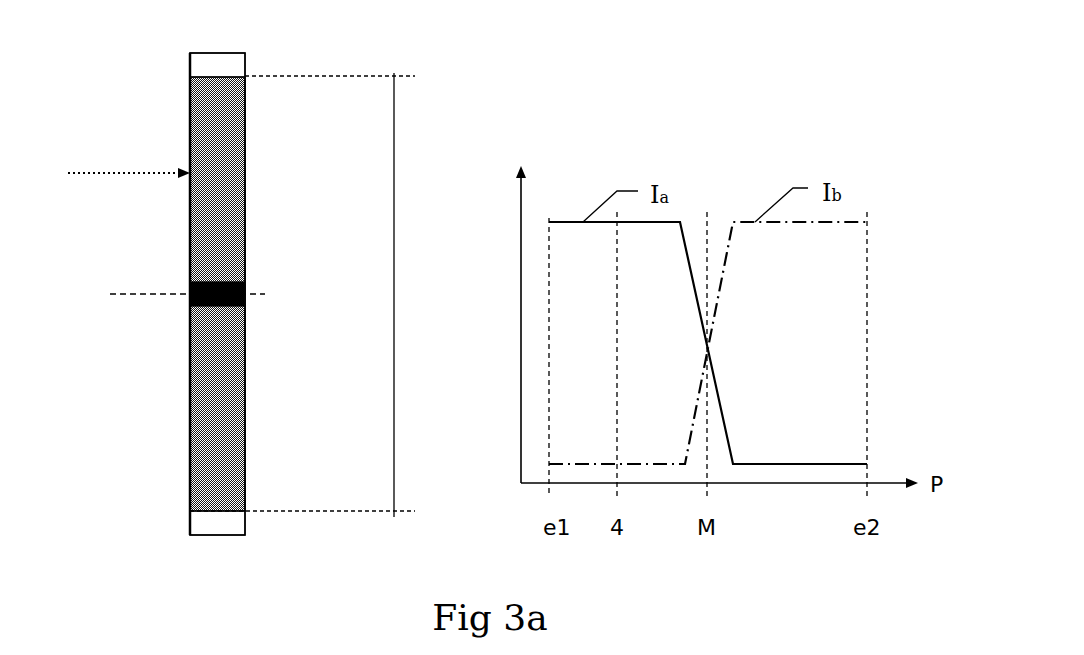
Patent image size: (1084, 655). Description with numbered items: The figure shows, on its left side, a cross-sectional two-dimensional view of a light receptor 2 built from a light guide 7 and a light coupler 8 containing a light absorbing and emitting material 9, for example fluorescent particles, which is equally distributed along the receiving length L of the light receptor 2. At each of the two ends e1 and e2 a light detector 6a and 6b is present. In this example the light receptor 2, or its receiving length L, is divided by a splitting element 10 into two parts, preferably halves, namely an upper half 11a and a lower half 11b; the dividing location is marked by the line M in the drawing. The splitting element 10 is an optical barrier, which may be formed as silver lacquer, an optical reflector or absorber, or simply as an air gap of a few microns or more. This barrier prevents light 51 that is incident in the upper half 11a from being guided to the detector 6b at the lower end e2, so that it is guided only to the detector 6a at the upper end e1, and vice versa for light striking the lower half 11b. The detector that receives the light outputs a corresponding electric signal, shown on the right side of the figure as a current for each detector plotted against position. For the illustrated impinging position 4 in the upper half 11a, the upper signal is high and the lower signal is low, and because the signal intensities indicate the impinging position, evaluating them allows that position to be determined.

The light receptor 2 is at (299, 116).
The impinging position 4 is at (214, 294).
The light 51 is at (143, 162).
The light detector 6a is at (218, 67).
The light detector 6b is at (217, 525).
The light guide 7 is at (214, 294).
The light coupler 8 is at (176, 231).
The light absorbing and emitting material 9 is at (215, 403).
The splitting element 10 is at (245, 285).
The upper half 11a is at (243, 185).
The lower half 11b is at (222, 435).
The receiving length L is at (394, 157).
The median plane M is at (170, 296).
The upper end e1 is at (178, 39).
The lower end e2 is at (183, 551).